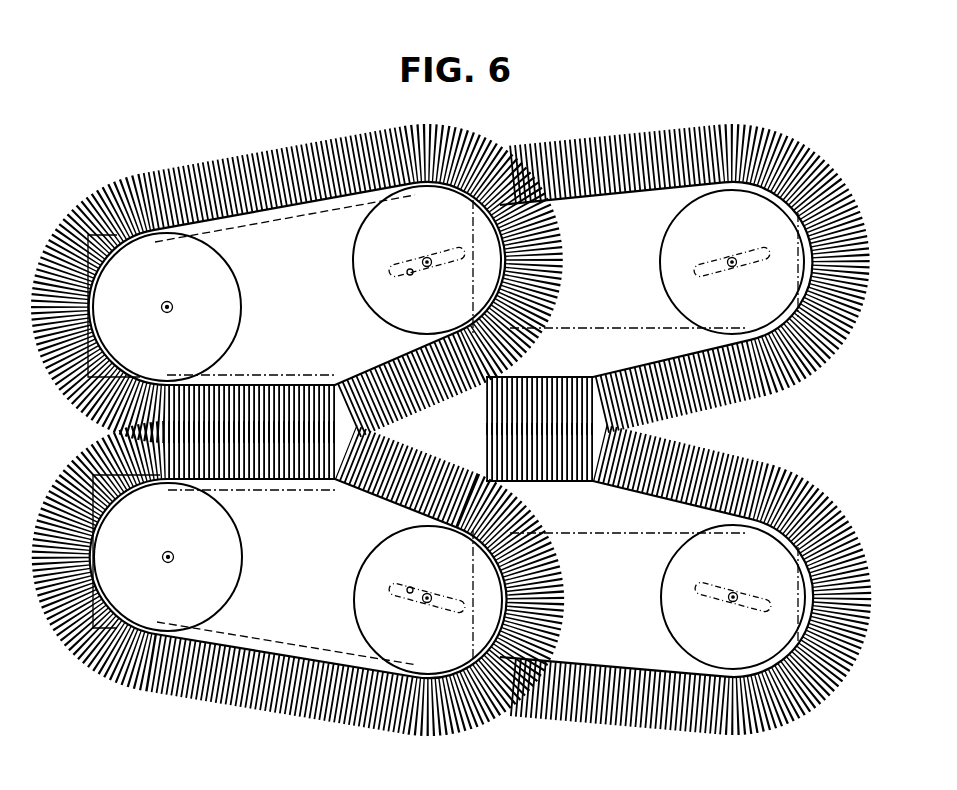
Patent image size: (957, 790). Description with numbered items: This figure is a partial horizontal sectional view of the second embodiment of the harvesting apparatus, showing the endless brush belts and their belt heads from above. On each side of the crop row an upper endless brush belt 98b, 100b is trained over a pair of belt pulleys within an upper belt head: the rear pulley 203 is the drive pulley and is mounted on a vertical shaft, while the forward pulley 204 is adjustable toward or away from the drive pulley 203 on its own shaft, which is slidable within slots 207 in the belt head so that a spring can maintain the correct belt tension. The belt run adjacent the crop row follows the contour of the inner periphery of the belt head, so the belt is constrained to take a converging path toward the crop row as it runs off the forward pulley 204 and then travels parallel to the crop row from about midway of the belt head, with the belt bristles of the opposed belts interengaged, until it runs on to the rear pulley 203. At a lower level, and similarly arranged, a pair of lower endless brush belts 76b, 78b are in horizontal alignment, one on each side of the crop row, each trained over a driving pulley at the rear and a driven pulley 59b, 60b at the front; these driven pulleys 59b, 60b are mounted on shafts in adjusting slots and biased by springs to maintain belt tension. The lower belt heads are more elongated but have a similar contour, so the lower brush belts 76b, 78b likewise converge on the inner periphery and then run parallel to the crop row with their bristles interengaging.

The rear pulley 203 is at (215, 273).
The forward pulley 204 is at (378, 295).
The slots 207 is at (412, 274).
The driven pulley 60b is at (680, 233).
The upper endless brush belt 100b is at (562, 304).
The lower endless brush belt 78b is at (852, 322).
The driven pulley 59b is at (680, 565).
The upper endless brush belt 98b is at (566, 617).
The lower endless brush belt 76b is at (850, 535).